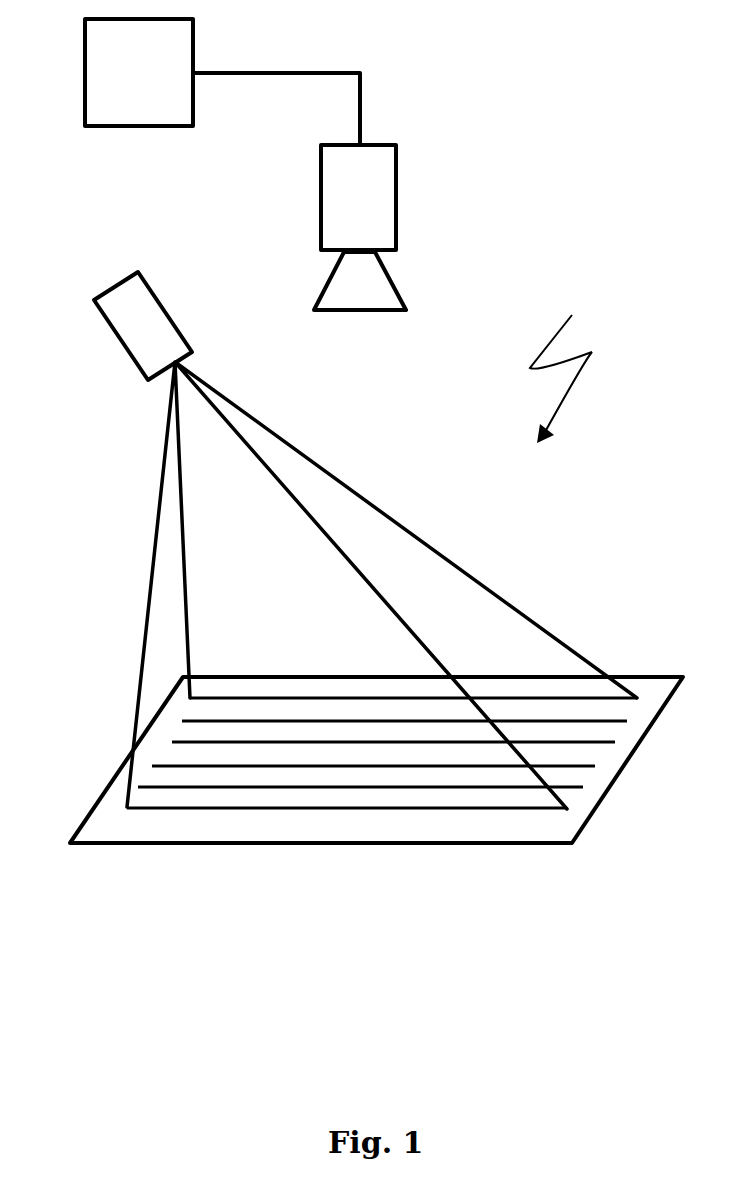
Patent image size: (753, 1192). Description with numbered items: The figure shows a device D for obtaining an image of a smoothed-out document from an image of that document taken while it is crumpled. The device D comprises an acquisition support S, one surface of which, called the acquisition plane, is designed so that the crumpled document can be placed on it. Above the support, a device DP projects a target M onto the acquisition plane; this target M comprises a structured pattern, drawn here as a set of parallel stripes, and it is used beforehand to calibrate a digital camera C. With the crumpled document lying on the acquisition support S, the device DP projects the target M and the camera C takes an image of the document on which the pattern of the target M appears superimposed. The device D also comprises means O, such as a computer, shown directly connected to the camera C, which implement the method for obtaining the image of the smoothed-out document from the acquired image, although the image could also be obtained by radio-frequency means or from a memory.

The means for implementing a method O is at (222, 81).
The digital camera C is at (398, 215).
The device for projecting a target DP is at (122, 346).
The device D is at (574, 365).
The target M is at (322, 680).
The acquisition support S is at (658, 672).